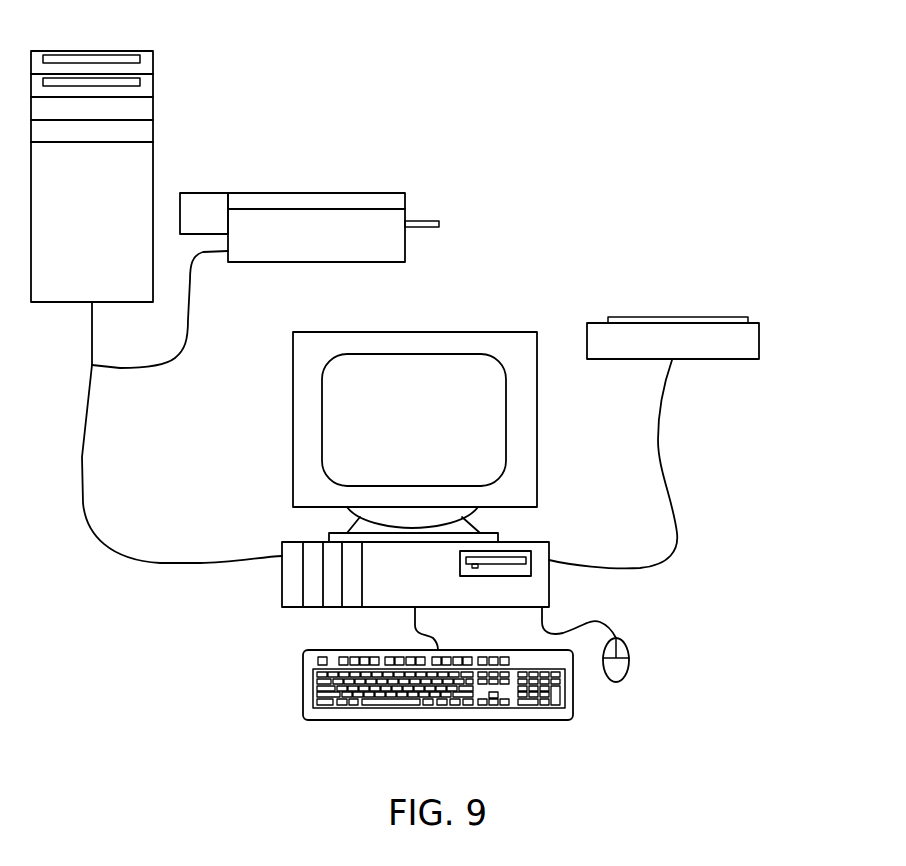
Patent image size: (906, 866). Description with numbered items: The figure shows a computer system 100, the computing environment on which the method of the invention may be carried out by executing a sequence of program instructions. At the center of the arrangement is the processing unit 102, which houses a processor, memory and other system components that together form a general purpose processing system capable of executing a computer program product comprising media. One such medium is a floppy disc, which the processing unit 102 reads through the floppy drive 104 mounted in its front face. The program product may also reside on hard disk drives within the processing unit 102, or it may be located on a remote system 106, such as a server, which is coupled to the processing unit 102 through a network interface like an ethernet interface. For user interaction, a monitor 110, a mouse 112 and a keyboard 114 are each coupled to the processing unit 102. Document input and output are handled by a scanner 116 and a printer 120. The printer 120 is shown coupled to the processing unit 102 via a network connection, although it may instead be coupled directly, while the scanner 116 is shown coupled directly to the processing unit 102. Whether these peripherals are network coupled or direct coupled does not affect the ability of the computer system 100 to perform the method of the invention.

The computer system 100 is at (573, 90).
The processing unit 102 is at (282, 592).
The floppy drive 104 is at (531, 563).
The remote system 106 is at (153, 168).
The monitor 110 is at (488, 332).
The mouse 112 is at (629, 672).
The keyboard 114 is at (303, 685).
The scanner 116 is at (702, 317).
The printer 120 is at (362, 193).